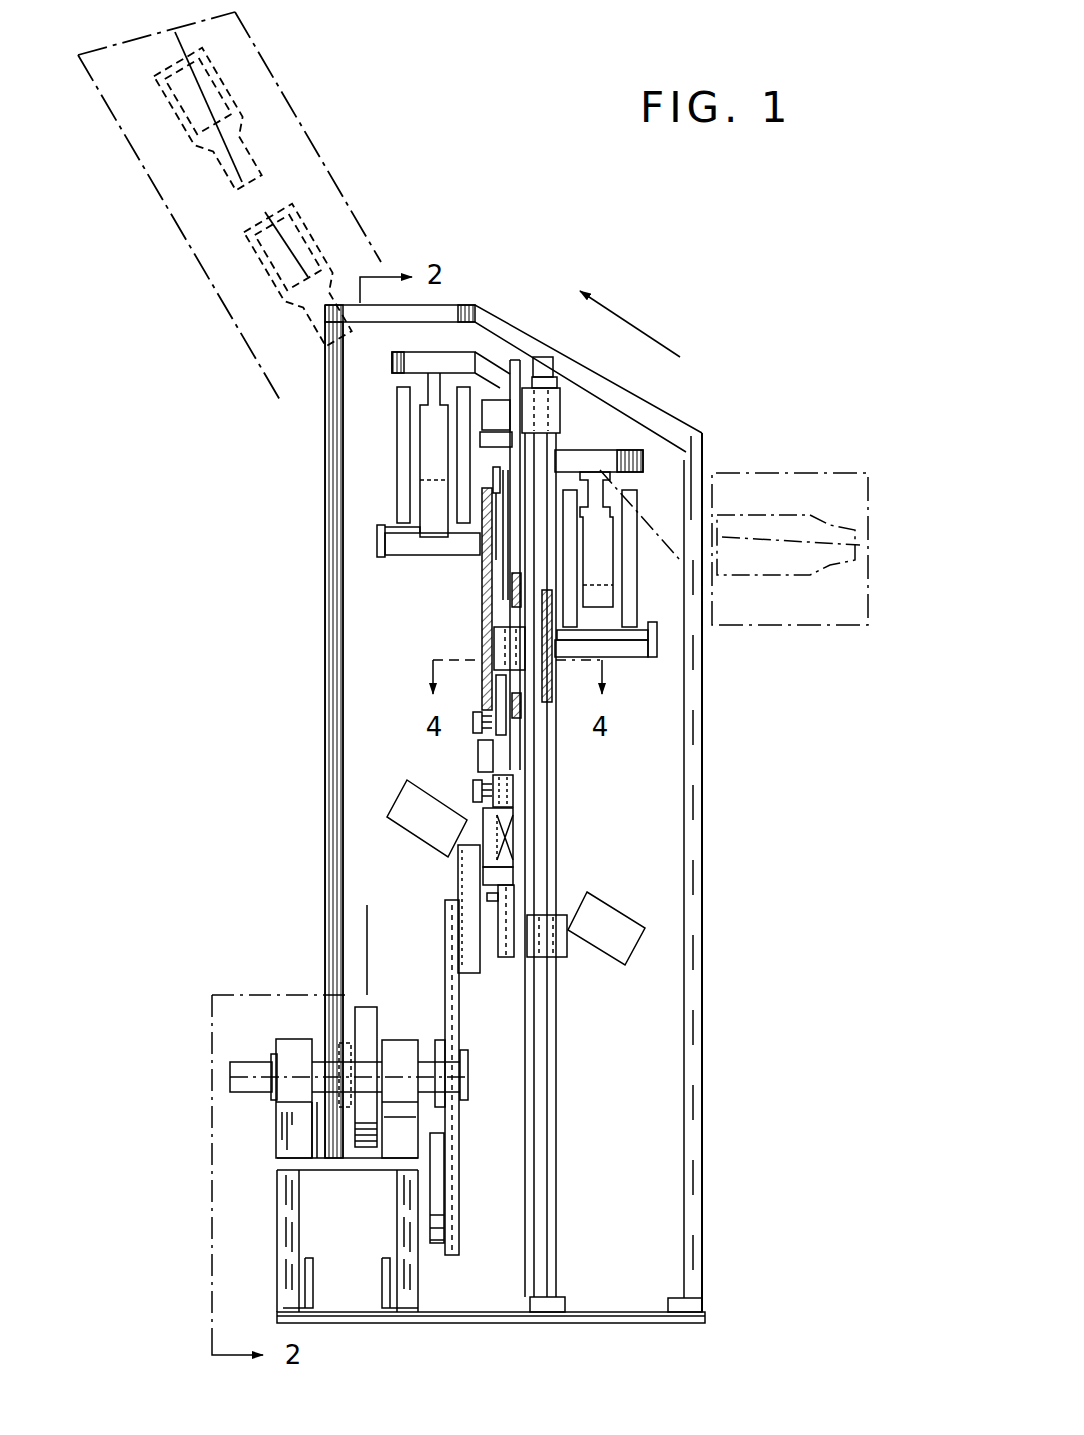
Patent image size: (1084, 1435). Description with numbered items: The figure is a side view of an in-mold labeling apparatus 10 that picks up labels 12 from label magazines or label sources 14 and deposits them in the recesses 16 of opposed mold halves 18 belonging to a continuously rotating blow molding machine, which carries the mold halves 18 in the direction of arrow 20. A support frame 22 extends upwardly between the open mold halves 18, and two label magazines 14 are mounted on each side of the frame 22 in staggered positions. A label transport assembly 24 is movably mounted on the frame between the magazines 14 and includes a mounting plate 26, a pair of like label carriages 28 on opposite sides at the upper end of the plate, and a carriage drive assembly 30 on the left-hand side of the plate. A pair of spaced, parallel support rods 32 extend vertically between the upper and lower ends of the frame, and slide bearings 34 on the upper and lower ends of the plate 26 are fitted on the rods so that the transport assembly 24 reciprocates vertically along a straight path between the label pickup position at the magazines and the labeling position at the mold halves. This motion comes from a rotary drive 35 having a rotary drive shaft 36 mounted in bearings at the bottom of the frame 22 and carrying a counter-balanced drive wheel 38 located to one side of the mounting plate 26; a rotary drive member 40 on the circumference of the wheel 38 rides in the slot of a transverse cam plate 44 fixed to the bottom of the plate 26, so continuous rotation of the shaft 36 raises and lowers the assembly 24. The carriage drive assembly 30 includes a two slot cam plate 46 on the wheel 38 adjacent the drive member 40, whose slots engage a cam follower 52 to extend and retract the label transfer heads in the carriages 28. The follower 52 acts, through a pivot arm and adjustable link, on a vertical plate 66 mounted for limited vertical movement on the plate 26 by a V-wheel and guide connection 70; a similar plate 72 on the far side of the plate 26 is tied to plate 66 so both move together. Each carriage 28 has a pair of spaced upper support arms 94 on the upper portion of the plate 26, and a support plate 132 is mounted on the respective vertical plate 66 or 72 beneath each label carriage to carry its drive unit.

The in-mold labeling apparatus 10 is at (228, 641).
The label 12 is at (142, 150).
The label magazine 14 is at (395, 805).
The recess 16 is at (278, 137).
The mold half 18 is at (350, 192).
The arrow 20 is at (607, 308).
The support frame 22 is at (703, 760).
The label transport assembly 24 is at (515, 347).
The mounting plate 26 is at (522, 853).
The label carriage 28 is at (382, 492).
The carriage drive assembly 30 is at (468, 752).
The support rod 32 is at (558, 812).
The slide bearing 34 is at (563, 407).
The rotary drive 35 is at (414, 1004).
The rotary drive shaft 36 is at (232, 1078).
The drive wheel 38 is at (455, 1160).
The rotary drive member 40 is at (505, 958).
The transverse cam plate 44 is at (502, 958).
The two slot cam plate 46 is at (457, 872).
The cam follower 52 is at (458, 880).
The vertical plate 66 is at (482, 640).
The V-wheel and guide connection 70 is at (495, 557).
The plate 72 is at (555, 688).
The upper support arm 94 is at (440, 352).
The support plate 132 is at (392, 555).